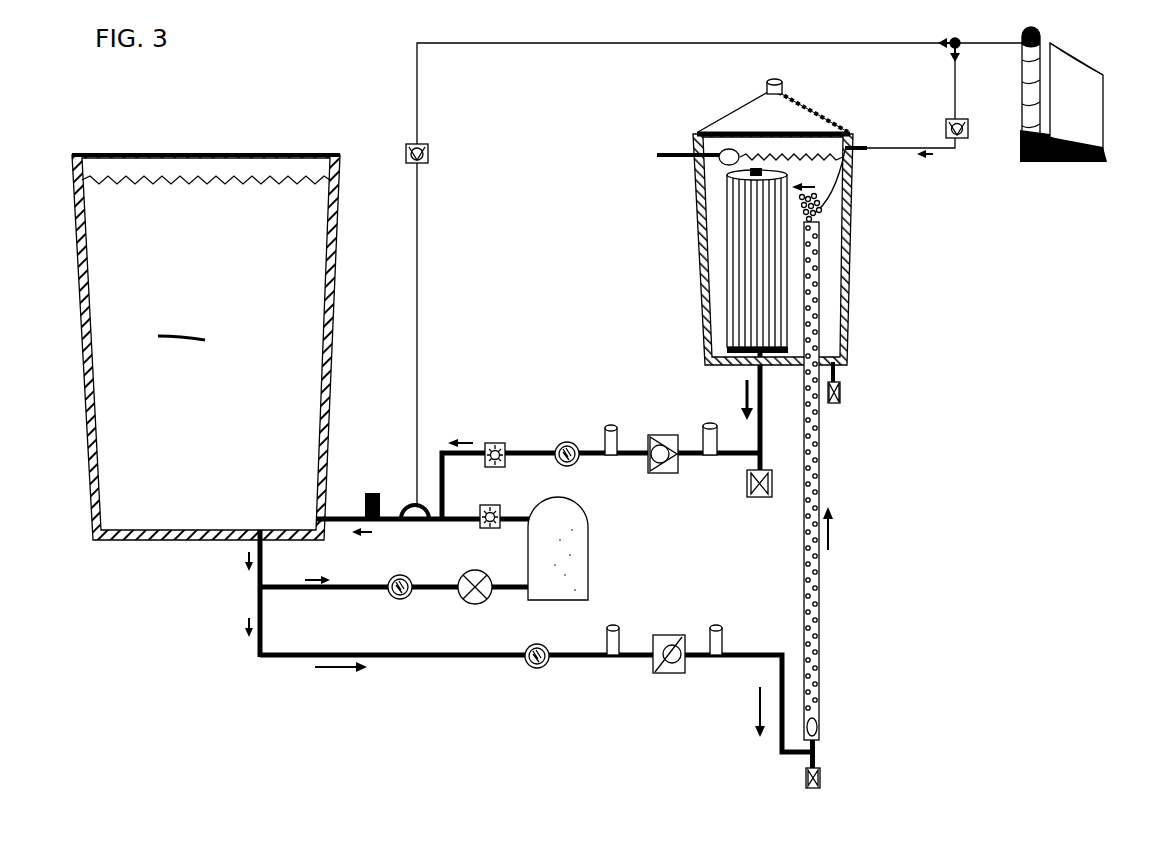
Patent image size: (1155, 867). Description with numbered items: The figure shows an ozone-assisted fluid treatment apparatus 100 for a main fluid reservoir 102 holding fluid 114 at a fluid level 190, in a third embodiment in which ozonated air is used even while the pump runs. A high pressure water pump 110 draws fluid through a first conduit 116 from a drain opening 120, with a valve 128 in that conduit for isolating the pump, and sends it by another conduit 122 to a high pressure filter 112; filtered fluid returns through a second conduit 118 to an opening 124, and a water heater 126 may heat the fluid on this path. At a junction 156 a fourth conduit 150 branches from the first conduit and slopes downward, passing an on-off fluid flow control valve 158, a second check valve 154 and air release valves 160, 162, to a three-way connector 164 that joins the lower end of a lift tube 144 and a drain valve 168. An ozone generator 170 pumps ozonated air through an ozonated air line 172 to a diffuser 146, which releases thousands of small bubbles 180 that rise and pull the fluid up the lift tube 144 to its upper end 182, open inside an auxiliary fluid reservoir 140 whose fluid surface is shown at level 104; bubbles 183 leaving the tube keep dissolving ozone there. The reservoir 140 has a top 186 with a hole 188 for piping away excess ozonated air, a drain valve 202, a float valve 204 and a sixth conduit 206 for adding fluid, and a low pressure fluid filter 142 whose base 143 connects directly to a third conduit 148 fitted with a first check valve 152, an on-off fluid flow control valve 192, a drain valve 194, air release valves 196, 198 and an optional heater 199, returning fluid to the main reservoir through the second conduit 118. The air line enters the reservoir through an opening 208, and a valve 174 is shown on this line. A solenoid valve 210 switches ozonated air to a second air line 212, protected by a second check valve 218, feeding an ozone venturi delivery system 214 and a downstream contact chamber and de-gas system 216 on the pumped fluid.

The ozone-assisted fluid treatment apparatus 100 is at (625, 275).
The main fluid reservoir 102 is at (98, 155).
The liquid level in vessel 104 is at (798, 160).
The high pressure water pump 110 is at (485, 573).
The high pressure filter 112 is at (585, 510).
The fluid 114 is at (181, 322).
The first conduit 116 is at (272, 586).
The second conduit 118 is at (450, 515).
The drain opening 120 is at (259, 535).
The conduit 122 is at (488, 590).
The opening 124 is at (316, 525).
The water heater 126 is at (497, 507).
The valve 128 is at (408, 575).
The auxiliary fluid reservoir 140 is at (855, 207).
The low pressure fluid filter 142 is at (727, 223).
The base of filter 143 is at (762, 357).
The lift tube 144 is at (820, 603).
The diffuser 146 is at (817, 718).
The third conduit 148 is at (443, 485).
The fourth conduit 150 is at (263, 632).
The first check valve 152 is at (662, 435).
The second check valve 154 is at (614, 625).
The junction 156 is at (256, 588).
The on-off fluid flow control valve 158 is at (545, 647).
The air release valve 160 is at (668, 635).
The air release valve 162 is at (715, 625).
The 3-way connector 164 is at (817, 753).
The drain valve 168 is at (822, 785).
The ozone generator 170 is at (1072, 48).
The ozonated air line 172 is at (1015, 43).
The gas valve 174 is at (947, 126).
The bubbles of ozonated air 180 is at (813, 665).
The upper end of lift tube 182 is at (822, 217).
The bubbles 183 is at (823, 182).
The top 186 is at (818, 115).
The hole 188 is at (782, 88).
The fluid level 190 is at (222, 182).
The on-off fluid flow control valve 192 is at (565, 442).
The drain valve 194 is at (772, 492).
The air release valve 196 is at (706, 423).
The air release valve 198 is at (608, 425).
The heater 199 is at (492, 443).
The drain valve 202 is at (840, 398).
The float valve 204 is at (715, 180).
The sixth conduit 206 is at (660, 153).
The opening 208 is at (862, 148).
The solenoid valve 210 is at (955, 40).
The second air line 212 is at (415, 80).
The ozone venturi delivery system 214 is at (405, 505).
The contact chamber and de-gas system 216 is at (368, 492).
The second check valve 218 is at (406, 150).